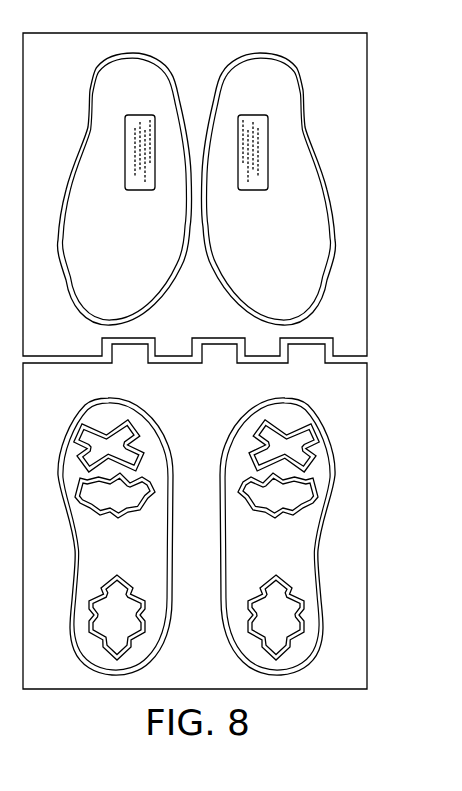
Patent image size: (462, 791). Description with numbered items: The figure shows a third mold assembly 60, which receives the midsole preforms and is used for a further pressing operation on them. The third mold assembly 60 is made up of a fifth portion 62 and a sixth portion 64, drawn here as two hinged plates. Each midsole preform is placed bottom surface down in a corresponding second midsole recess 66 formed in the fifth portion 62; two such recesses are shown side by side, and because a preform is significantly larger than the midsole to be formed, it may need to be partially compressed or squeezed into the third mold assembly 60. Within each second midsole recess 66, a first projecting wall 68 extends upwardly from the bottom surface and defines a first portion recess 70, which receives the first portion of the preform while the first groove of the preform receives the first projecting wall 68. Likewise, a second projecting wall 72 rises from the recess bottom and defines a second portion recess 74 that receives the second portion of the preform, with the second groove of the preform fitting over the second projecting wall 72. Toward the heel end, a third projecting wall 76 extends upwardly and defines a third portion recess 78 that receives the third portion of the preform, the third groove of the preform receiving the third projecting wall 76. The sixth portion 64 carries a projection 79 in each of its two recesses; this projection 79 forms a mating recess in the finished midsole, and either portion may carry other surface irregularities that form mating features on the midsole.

The third mold assembly 60 is at (213, 361).
The fifth portion 62 is at (361, 681).
The sixth portion 64 is at (361, 61).
The second midsole recess 66 is at (78, 535).
The first projecting wall 68 is at (120, 441).
The first portion recess 70 is at (112, 448).
The second projecting wall 72 is at (253, 512).
The second portion recess 74 is at (277, 497).
The third projecting wall 76 is at (267, 653).
The third portion recess 78 is at (128, 625).
The projection 79 is at (140, 190).